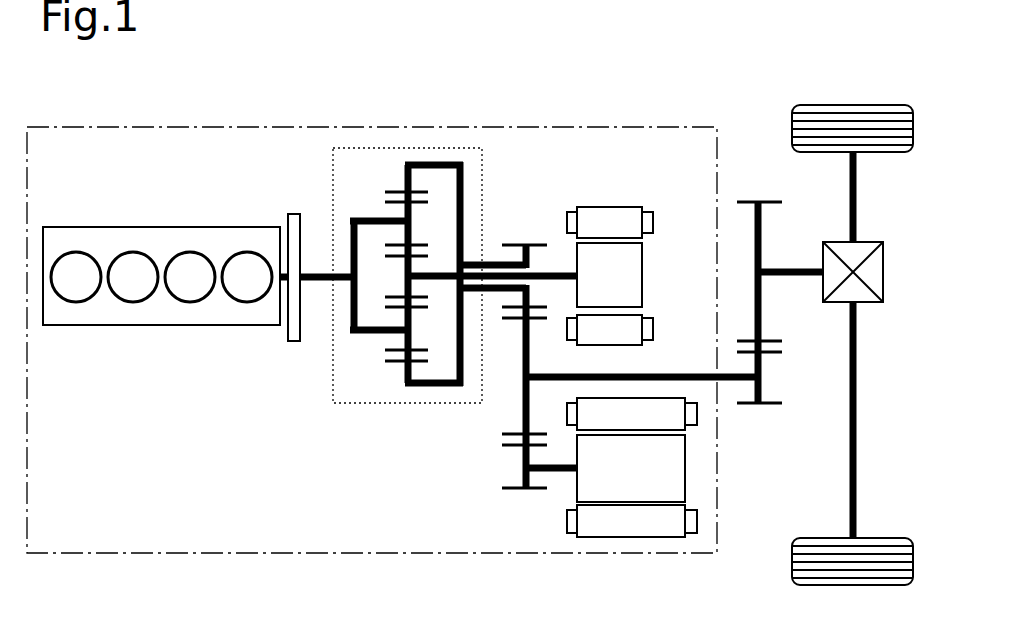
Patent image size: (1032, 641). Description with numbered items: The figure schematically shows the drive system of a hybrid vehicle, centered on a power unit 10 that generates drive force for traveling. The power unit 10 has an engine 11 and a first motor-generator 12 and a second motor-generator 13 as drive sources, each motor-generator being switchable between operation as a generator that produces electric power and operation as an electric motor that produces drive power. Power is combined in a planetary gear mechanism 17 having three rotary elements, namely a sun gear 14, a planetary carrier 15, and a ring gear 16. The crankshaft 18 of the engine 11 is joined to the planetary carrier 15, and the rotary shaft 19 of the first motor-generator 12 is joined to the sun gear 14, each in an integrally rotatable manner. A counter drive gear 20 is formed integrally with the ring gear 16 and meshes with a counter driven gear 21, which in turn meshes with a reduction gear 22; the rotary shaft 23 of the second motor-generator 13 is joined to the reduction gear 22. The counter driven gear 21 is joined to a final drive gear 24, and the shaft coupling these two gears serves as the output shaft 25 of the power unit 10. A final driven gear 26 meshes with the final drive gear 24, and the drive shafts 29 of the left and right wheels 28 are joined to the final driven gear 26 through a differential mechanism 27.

The power unit 10 is at (183, 125).
The engine 11 is at (160, 327).
The first motor-generator 12 is at (602, 212).
The second motor-generator 13 is at (628, 532).
The sun gear 14 is at (385, 290).
The planetary carrier 15 is at (365, 219).
The ring gear 16 is at (393, 363).
The planetary gear mechanism 17 is at (412, 405).
The crankshaft 18 is at (318, 272).
The rotary shaft 19 is at (563, 268).
The counter drive gear 20 is at (510, 242).
The counter driven gear 21 is at (517, 433).
The reduction gear 22 is at (512, 492).
The rotary shaft 23 is at (558, 475).
The final drive gear 24 is at (752, 407).
The output shaft 25 is at (695, 375).
The final driven gear 26 is at (748, 199).
The differential mechanism 27 is at (880, 268).
The wheels 28 is at (795, 113).
The drive shafts 29 is at (858, 183).